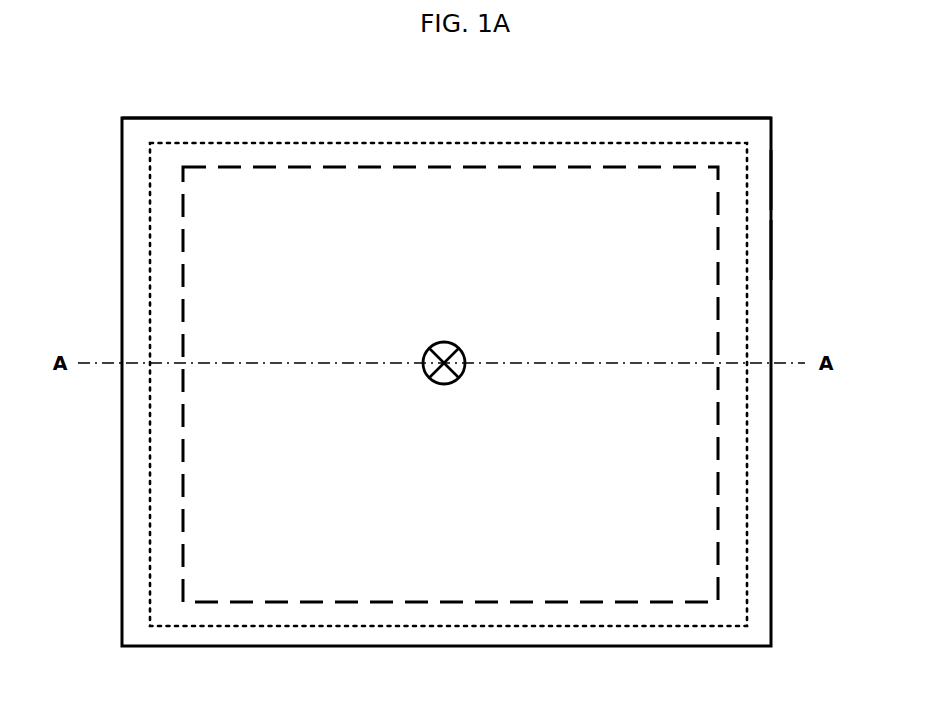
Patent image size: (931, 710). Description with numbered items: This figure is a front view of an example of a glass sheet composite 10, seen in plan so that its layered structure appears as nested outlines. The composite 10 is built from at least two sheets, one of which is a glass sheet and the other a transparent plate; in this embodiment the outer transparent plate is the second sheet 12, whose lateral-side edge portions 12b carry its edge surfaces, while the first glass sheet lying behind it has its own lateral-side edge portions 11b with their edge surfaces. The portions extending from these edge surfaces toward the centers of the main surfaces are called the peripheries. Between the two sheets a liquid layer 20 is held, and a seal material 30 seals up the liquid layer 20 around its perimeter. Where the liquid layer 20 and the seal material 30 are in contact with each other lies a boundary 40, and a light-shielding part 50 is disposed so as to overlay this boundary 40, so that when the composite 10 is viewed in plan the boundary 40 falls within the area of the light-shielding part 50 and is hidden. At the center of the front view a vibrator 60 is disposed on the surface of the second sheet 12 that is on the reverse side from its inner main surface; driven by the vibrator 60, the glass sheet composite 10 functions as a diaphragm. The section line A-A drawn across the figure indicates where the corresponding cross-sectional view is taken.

The glass sheet composite 10 is at (204, 100).
The second sheet 12 is at (337, 125).
The lateral-side edge portions of the second sheet 12b is at (772, 180).
The lateral-side edge portions of the first sheet 11b is at (772, 248).
The liquid layer 20 is at (468, 233).
The seal material 30 is at (748, 128).
The boundary 40 is at (537, 142).
The light-shielding part 50 is at (638, 155).
The vibrator 60 is at (466, 370).